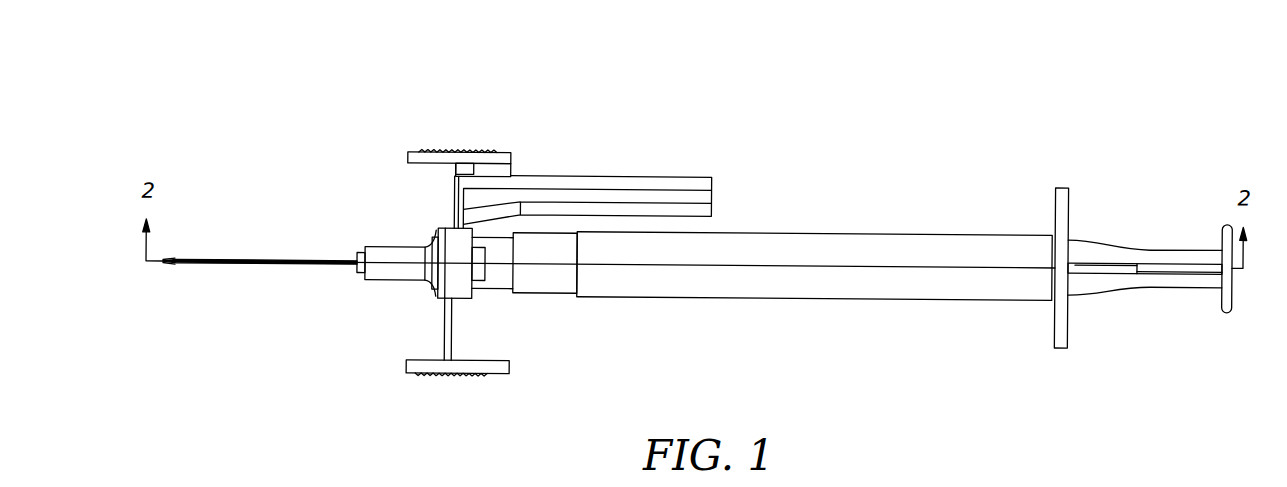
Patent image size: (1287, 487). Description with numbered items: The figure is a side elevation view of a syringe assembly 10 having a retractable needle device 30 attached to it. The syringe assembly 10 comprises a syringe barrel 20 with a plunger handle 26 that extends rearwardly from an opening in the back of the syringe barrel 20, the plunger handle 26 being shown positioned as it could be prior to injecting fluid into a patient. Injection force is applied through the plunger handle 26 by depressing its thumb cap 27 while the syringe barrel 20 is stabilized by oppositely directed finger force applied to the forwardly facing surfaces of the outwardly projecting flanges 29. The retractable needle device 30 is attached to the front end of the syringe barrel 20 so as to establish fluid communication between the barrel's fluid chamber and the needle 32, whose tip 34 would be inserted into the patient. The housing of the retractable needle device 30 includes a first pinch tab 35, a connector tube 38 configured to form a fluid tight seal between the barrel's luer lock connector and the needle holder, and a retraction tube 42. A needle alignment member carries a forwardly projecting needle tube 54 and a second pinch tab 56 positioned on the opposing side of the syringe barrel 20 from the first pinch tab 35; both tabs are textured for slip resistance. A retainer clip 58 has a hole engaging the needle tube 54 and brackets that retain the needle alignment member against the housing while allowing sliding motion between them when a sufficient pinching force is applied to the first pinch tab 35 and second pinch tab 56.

The syringe assembly 10 is at (243, 121).
The syringe barrel 20 is at (904, 238).
The plunger handle 26 is at (1118, 242).
The thumb cap 27 is at (1225, 299).
The outwardly projecting flanges 29 is at (1065, 186).
The retractable needle device 30 is at (437, 266).
The needle 32 is at (245, 256).
The tip 34 is at (172, 263).
The first pinch tab 35 is at (433, 148).
The connector tube 38 is at (505, 279).
The retraction tube 42 is at (608, 175).
The needle tube 54 is at (393, 272).
The second pinch tab 56 is at (482, 363).
The retainer clip 58 is at (450, 230).